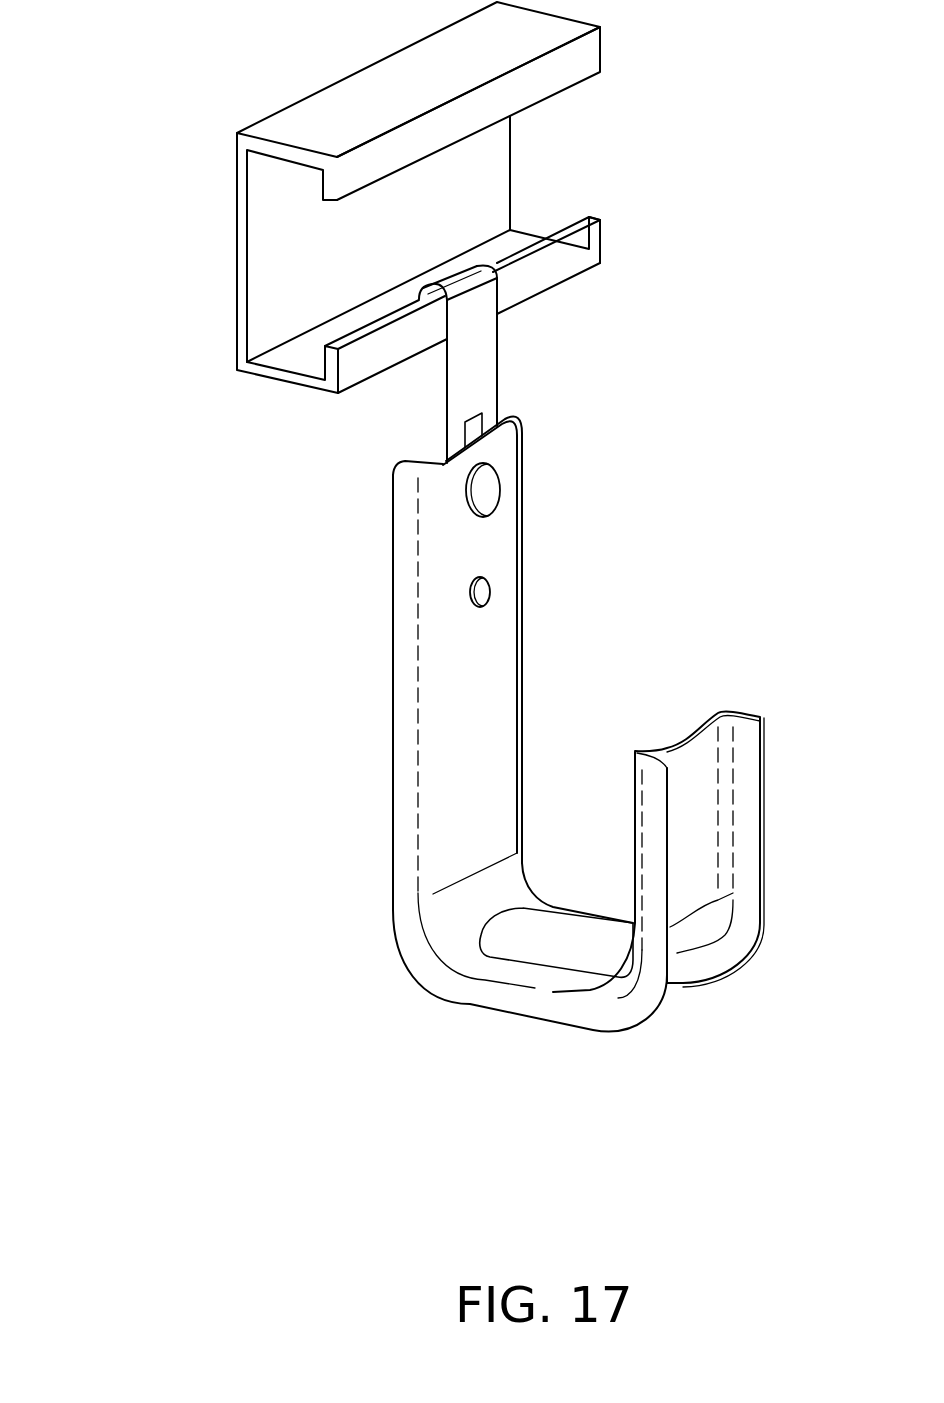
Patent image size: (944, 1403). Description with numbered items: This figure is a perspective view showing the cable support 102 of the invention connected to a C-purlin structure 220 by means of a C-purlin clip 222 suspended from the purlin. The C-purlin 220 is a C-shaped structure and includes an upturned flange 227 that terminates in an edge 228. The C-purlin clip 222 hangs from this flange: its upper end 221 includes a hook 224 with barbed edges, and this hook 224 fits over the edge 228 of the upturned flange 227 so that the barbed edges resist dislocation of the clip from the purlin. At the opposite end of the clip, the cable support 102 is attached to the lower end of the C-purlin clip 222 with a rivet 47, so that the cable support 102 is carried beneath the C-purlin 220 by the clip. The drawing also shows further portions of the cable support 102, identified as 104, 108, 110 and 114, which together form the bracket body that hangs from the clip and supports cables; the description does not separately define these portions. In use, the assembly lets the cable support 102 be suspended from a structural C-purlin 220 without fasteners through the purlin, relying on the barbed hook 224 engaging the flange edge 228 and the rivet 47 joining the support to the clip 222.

The C-purlin structure 220 is at (399, 197).
The hook 224 is at (450, 252).
The edge 228 is at (584, 217).
The upturned flange 227 is at (590, 250).
The C-purlin clip 222 is at (494, 318).
The upper end 221 is at (463, 385).
The rivet 47 is at (490, 492).
The short arm of hook 108 is at (684, 710).
The long arm of hook 104 is at (513, 702).
The cable support 102 is at (452, 769).
The cradle surface 110 is at (553, 947).
The bottom of hook 114 is at (595, 1012).